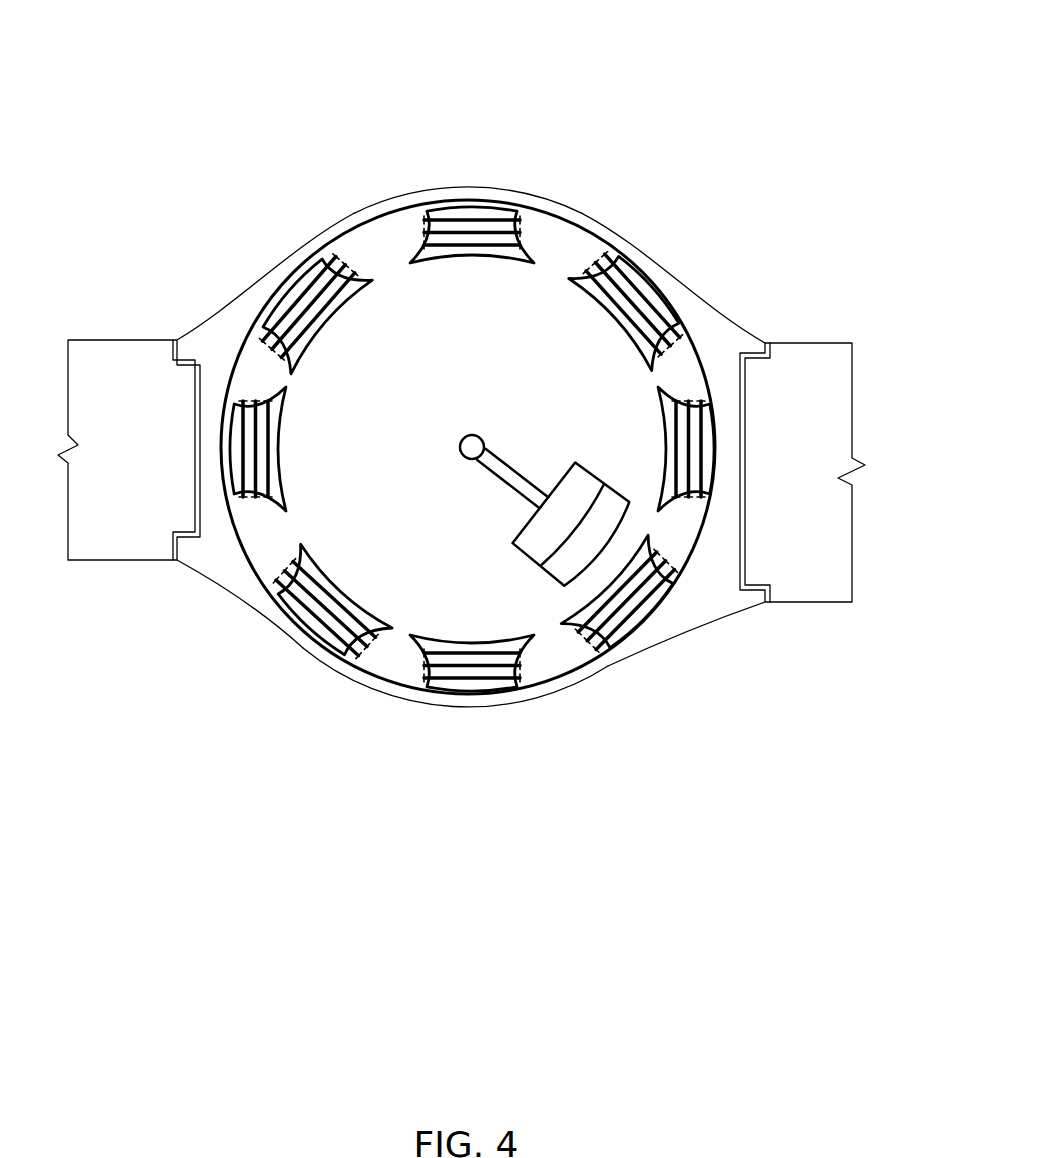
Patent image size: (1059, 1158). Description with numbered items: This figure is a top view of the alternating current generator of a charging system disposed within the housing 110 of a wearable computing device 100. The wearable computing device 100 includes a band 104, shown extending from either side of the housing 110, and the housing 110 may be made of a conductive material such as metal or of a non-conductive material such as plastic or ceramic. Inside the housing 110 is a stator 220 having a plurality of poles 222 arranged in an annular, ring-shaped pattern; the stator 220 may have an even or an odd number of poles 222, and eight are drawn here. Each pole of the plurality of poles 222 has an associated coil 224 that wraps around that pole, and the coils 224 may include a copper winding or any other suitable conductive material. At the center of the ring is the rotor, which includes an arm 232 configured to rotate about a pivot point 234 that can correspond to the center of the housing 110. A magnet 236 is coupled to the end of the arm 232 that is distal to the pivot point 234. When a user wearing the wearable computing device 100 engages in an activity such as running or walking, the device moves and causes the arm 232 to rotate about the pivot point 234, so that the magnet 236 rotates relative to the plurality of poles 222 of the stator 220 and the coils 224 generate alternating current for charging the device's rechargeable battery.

The wearable computing device 100 is at (683, 83).
The band 104 is at (108, 352).
The housing 110 is at (640, 238).
The stator 220 is at (285, 536).
The poles 222 is at (343, 297).
The coils 224 is at (488, 222).
The arm 232 is at (487, 476).
The pivot point 234 is at (480, 436).
The magnet 236 is at (628, 518).